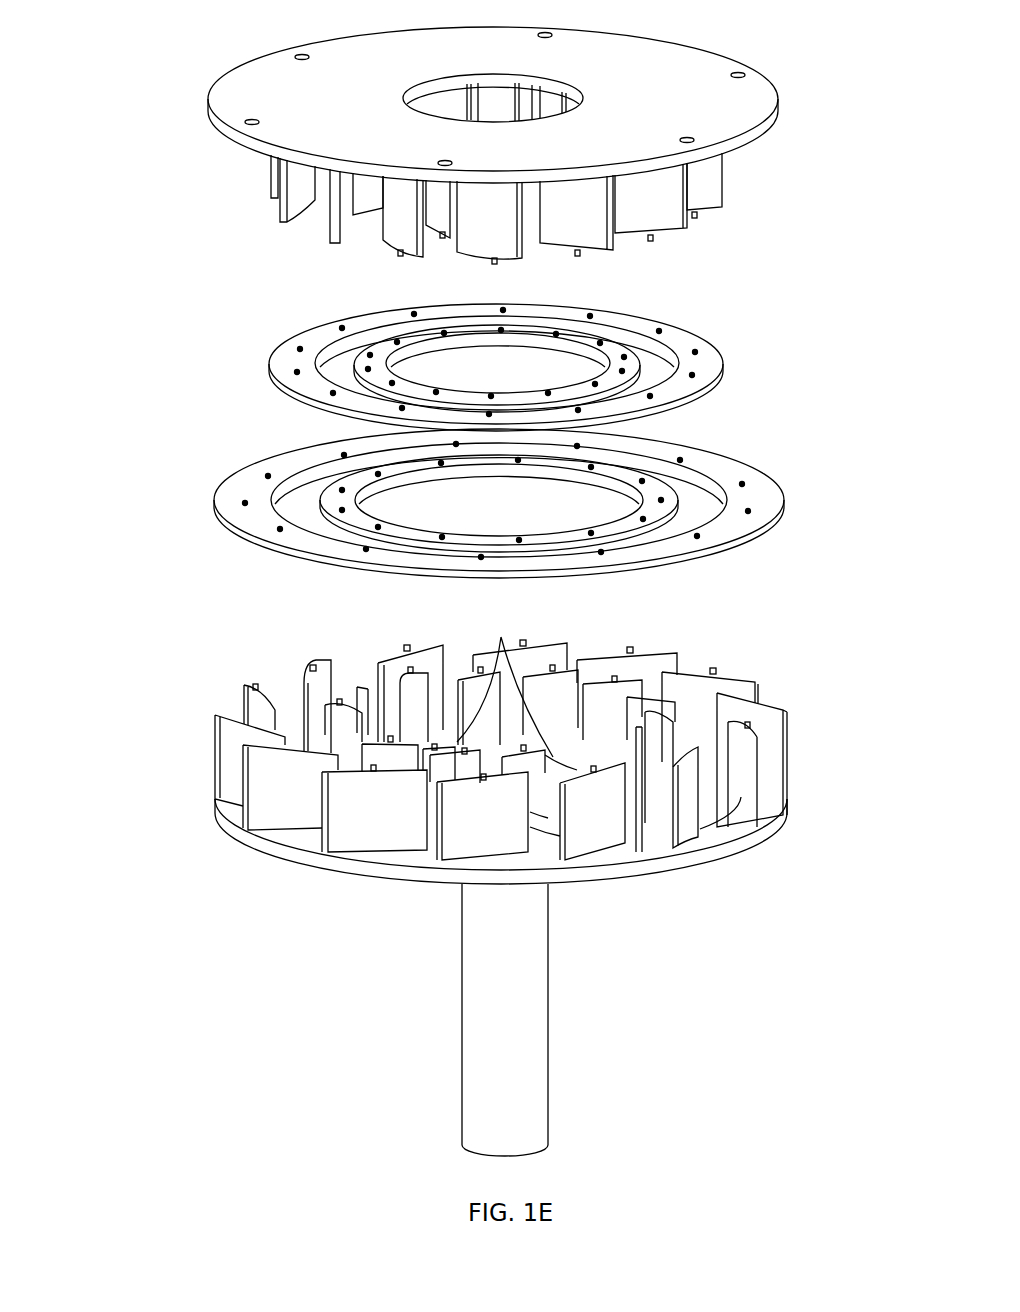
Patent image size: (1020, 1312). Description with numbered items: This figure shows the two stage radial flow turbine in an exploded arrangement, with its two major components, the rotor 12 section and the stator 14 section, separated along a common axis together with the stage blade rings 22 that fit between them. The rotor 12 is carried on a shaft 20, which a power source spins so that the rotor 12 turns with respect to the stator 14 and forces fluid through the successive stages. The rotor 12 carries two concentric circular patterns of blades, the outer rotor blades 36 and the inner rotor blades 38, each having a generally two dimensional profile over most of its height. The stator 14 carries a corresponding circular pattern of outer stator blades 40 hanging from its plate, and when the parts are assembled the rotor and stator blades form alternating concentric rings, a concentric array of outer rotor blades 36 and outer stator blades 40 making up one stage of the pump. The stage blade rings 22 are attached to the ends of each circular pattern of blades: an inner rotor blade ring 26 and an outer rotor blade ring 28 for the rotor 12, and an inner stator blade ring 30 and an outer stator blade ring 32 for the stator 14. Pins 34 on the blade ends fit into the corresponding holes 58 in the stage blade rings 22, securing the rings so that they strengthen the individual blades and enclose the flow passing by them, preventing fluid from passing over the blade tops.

The rotor 12 is at (707, 863).
The stator 14 is at (737, 100).
The shaft 20 is at (510, 1045).
The stage blade ring 22 is at (474, 433).
The inner rotor blade ring 26 is at (618, 517).
The outer rotor blade ring 28 is at (723, 518).
The inner stator blade ring 30 is at (383, 377).
The outer stator blade ring 32 is at (288, 362).
The pins 34 is at (650, 240).
The outer rotor blades 36 is at (365, 812).
The inner rotor blades 38 is at (417, 711).
The outer stator blades 40 is at (705, 185).
The holes 58 is at (345, 330).